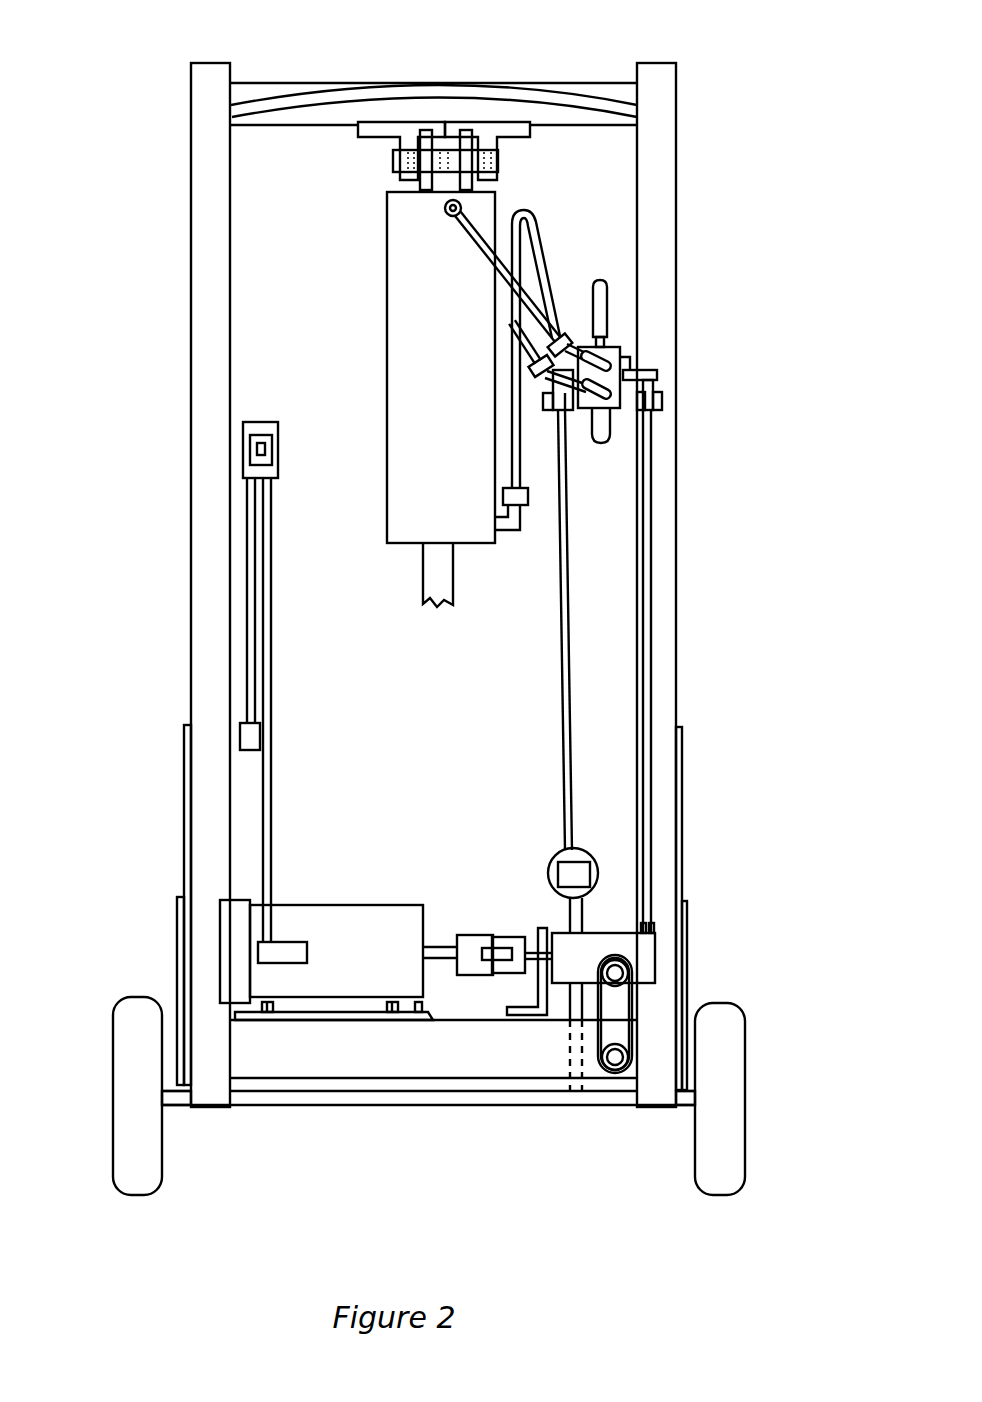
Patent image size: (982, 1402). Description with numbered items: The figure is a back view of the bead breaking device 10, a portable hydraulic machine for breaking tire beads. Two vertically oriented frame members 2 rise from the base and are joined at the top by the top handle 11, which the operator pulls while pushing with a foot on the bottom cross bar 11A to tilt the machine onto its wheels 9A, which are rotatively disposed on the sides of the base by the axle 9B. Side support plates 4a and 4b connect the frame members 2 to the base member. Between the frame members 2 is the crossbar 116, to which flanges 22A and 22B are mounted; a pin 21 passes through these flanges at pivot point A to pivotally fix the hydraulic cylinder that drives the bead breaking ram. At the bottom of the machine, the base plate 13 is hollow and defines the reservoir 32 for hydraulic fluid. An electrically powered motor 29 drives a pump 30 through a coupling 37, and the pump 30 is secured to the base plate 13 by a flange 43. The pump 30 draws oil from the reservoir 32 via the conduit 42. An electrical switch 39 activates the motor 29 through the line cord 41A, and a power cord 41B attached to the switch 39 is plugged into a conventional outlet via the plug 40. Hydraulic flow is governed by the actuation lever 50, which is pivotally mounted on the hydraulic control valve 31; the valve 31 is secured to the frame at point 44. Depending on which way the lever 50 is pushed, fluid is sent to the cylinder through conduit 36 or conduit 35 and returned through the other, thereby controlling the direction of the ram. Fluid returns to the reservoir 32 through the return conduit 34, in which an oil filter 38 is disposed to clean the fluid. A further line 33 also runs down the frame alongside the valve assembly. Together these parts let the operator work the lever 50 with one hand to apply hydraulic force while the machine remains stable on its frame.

The frame members 2 is at (214, 192).
The top handle 11 is at (335, 95).
The crossbar 116 is at (430, 105).
The pivot point A is at (465, 112).
The flange 22A is at (517, 137).
The flange 22B is at (357, 130).
The pin 21 is at (500, 153).
The conduit 36 is at (450, 213).
The conduit 35 is at (538, 253).
The actuation lever 50 is at (603, 298).
The hydraulic control valve 31 is at (627, 343).
The point 44 is at (658, 368).
The right cable 33 is at (654, 448).
The return conduit 34 is at (565, 520).
The bead breaking device 10 is at (814, 596).
The electrical switch 39 is at (278, 433).
The line cord 41A is at (268, 605).
The power cord 41B is at (249, 662).
The plug 40 is at (254, 738).
The side support plate 4a is at (185, 800).
The side support plate 4b is at (178, 935).
The motor 29 is at (358, 905).
The coupling 37 is at (462, 933).
The flange 43 is at (527, 1008).
The oil filter 38 is at (553, 860).
The pump 30 is at (657, 957).
The conduit 42 is at (620, 1023).
The reservoir 32 is at (552, 1057).
The base plate 13 is at (400, 1065).
The bottom cross bar 11A is at (325, 1087).
The axle 9B is at (172, 1107).
The wheels 9A is at (110, 1062).